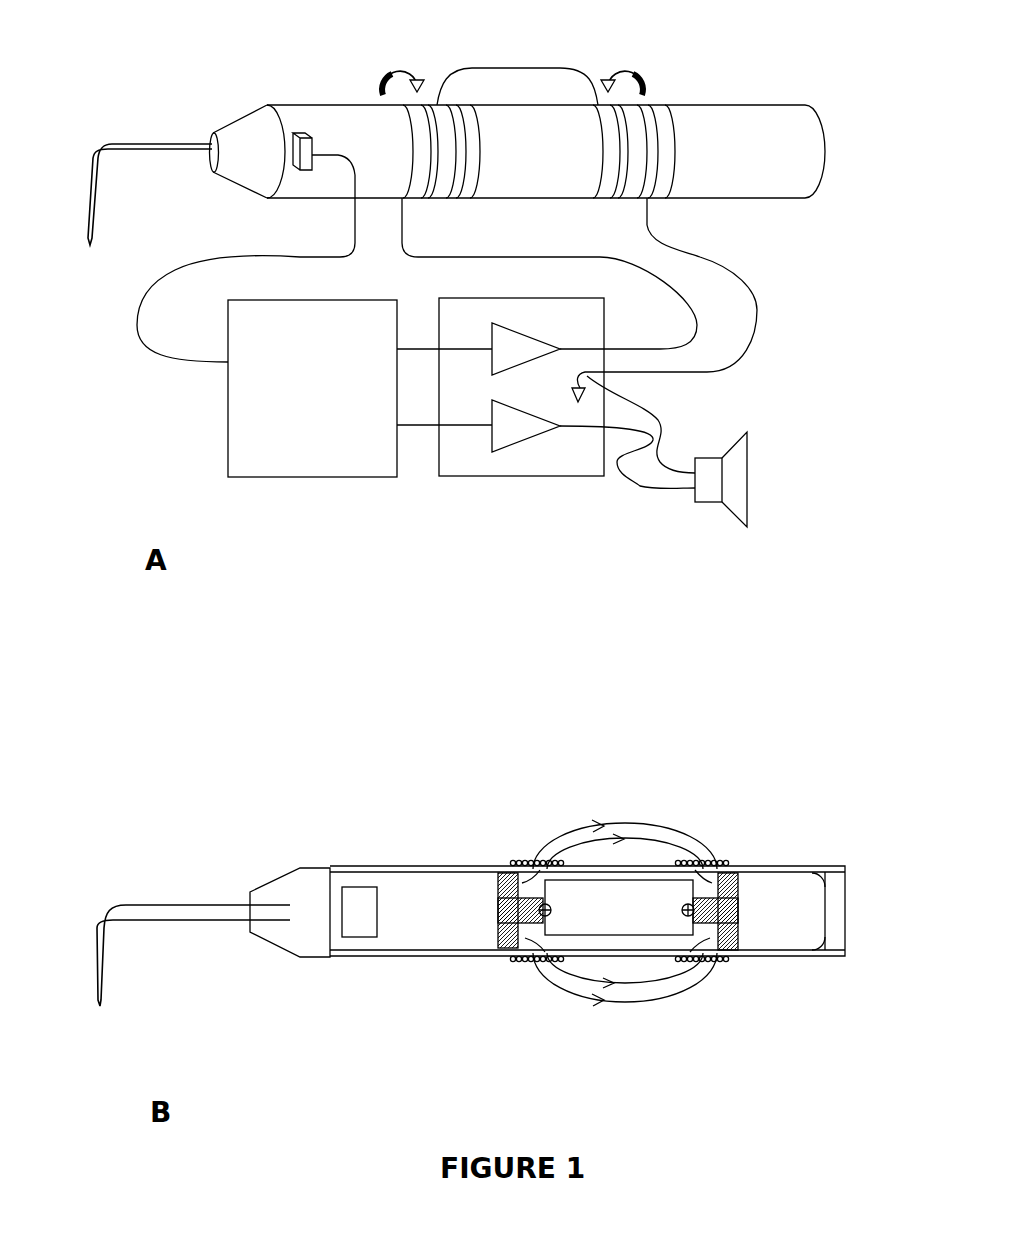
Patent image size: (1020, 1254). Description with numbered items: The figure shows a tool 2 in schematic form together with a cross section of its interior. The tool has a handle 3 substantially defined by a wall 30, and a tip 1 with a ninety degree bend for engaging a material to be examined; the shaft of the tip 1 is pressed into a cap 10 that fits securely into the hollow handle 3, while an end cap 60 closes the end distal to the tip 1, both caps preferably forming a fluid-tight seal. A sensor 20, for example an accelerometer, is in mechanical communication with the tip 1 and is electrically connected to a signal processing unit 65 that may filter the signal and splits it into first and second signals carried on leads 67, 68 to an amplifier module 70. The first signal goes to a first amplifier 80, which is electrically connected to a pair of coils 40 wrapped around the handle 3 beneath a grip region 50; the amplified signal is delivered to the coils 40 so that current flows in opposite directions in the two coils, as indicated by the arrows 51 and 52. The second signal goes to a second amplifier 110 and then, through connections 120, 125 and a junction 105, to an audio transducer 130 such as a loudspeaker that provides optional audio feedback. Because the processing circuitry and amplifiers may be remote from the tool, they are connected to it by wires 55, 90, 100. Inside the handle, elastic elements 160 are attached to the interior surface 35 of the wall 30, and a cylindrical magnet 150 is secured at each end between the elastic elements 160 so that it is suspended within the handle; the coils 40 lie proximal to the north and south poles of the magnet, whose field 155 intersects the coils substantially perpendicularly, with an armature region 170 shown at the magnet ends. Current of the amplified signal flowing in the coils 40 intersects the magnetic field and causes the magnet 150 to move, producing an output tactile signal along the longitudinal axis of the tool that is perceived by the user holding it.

In FIG. 1A, the tip 1 is at (93, 153).
In FIG. 1B, the tip 1 is at (102, 912).
In FIG. 1A, the dental device 2 is at (815, 60).
In FIG. 1A, the handle 3 is at (775, 198).
In FIG. 1A, the cap 10 is at (227, 127).
In FIG. 1A, the sensor 20 is at (313, 152).
In FIG. 1B, the sensor 20 is at (377, 907).
In FIG. 1B, the wall 30 is at (800, 863).
In FIG. 1B, the interior surface 35 is at (840, 880).
In FIG. 1A, the coils 40 is at (403, 127).
In FIG. 1B, the coils 40 is at (512, 862).
In FIG. 1A, the grip button 50 is at (497, 68).
In FIG. 1A, the arrow 51 is at (410, 62).
In FIG. 1A, the arrow 52 is at (629, 58).
In FIG. 1A, the wire 55 is at (180, 262).
In FIG. 1B, the end cap 60 is at (845, 907).
In FIG. 1A, the signal processing unit 65 is at (254, 478).
In FIG. 1A, the power lead 67 is at (432, 332).
In FIG. 1A, the power lead 68 is at (415, 428).
In FIG. 1A, the amplifier module 70 is at (487, 478).
In FIG. 1A, the first amplifier 80 is at (507, 323).
In FIG. 1A, the wire 90 is at (490, 256).
In FIG. 1A, the wire 100 is at (757, 303).
In FIG. 1A, the ground connection 105 is at (567, 392).
In FIG. 1A, the second amplifier 110 is at (540, 438).
In FIG. 1A, the speaker lead 120 is at (630, 483).
In FIG. 1A, the speaker lead 125 is at (668, 420).
In FIG. 1A, the audio transducer 130 is at (748, 485).
In FIG. 1B, the cylindrical magnet 150 is at (505, 930).
In FIG. 1B, the magnetic field lines 155 is at (640, 828).
In FIG. 1B, the elastic elements 160 is at (493, 887).
In FIG. 1B, the magnet 170 is at (540, 900).